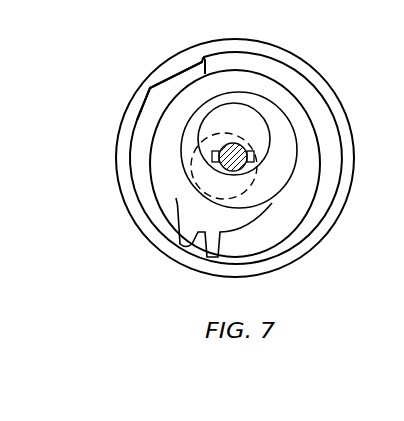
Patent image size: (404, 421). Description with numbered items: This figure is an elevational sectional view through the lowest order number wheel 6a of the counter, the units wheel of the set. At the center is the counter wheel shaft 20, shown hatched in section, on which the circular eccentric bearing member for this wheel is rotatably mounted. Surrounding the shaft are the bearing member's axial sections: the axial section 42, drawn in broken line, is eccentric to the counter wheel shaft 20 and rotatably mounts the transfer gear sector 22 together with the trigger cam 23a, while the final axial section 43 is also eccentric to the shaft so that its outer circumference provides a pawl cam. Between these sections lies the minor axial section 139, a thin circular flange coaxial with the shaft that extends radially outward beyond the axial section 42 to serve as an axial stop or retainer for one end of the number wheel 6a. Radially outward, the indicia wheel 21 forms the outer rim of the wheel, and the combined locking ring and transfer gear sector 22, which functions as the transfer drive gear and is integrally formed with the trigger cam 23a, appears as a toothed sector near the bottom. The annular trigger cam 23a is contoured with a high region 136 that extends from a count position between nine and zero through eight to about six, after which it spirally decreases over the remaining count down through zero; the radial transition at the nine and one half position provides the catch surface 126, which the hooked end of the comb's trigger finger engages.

The lowest order number wheel 6a is at (131, 103).
The counter wheel shaft 20 is at (233, 143).
The indicia wheel 21 is at (116, 147).
The combined locking ring and transfer gear sector 22 is at (177, 222).
The trigger cam 23a is at (248, 70).
The axial section 42 is at (240, 199).
The final axial section 43 is at (201, 118).
The catch surface 126 is at (211, 60).
The high region 136 is at (168, 79).
The minor axial section 139 is at (262, 193).